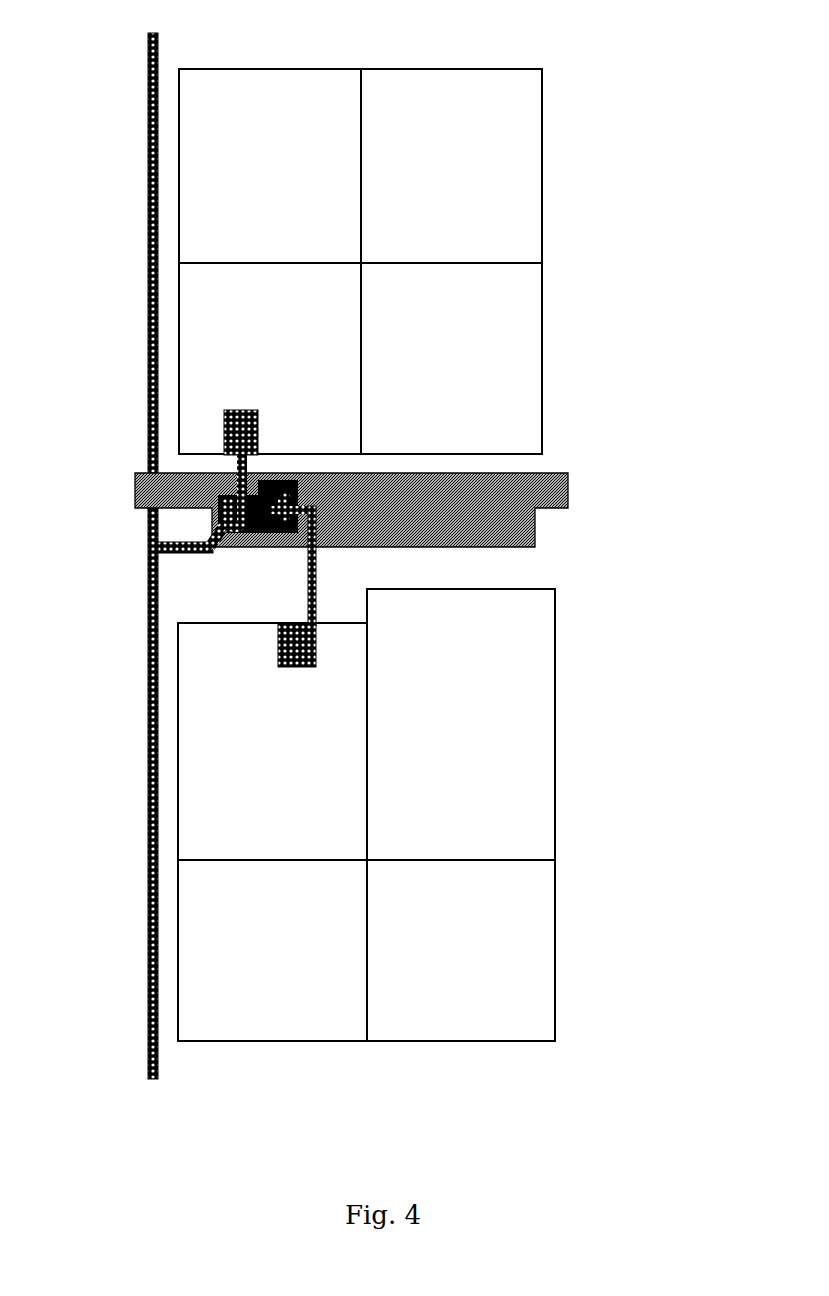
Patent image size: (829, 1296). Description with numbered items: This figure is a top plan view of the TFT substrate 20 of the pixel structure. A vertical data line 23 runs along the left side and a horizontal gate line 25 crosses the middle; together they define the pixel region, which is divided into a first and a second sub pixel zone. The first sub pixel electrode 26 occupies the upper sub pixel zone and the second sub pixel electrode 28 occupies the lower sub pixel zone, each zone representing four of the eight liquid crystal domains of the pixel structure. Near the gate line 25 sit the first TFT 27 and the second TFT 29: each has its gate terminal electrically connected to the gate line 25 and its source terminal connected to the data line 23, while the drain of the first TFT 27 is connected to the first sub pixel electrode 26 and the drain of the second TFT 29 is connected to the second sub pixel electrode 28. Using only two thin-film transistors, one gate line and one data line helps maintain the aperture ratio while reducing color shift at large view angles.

The TFT substrate 20 is at (395, 542).
The data line 23 is at (150, 383).
The gate line 25 is at (515, 518).
The first sub pixel electrode 26 is at (454, 306).
The first TFT 27 is at (212, 523).
The second sub pixel electrode 28 is at (435, 740).
The second TFT 29 is at (203, 477).